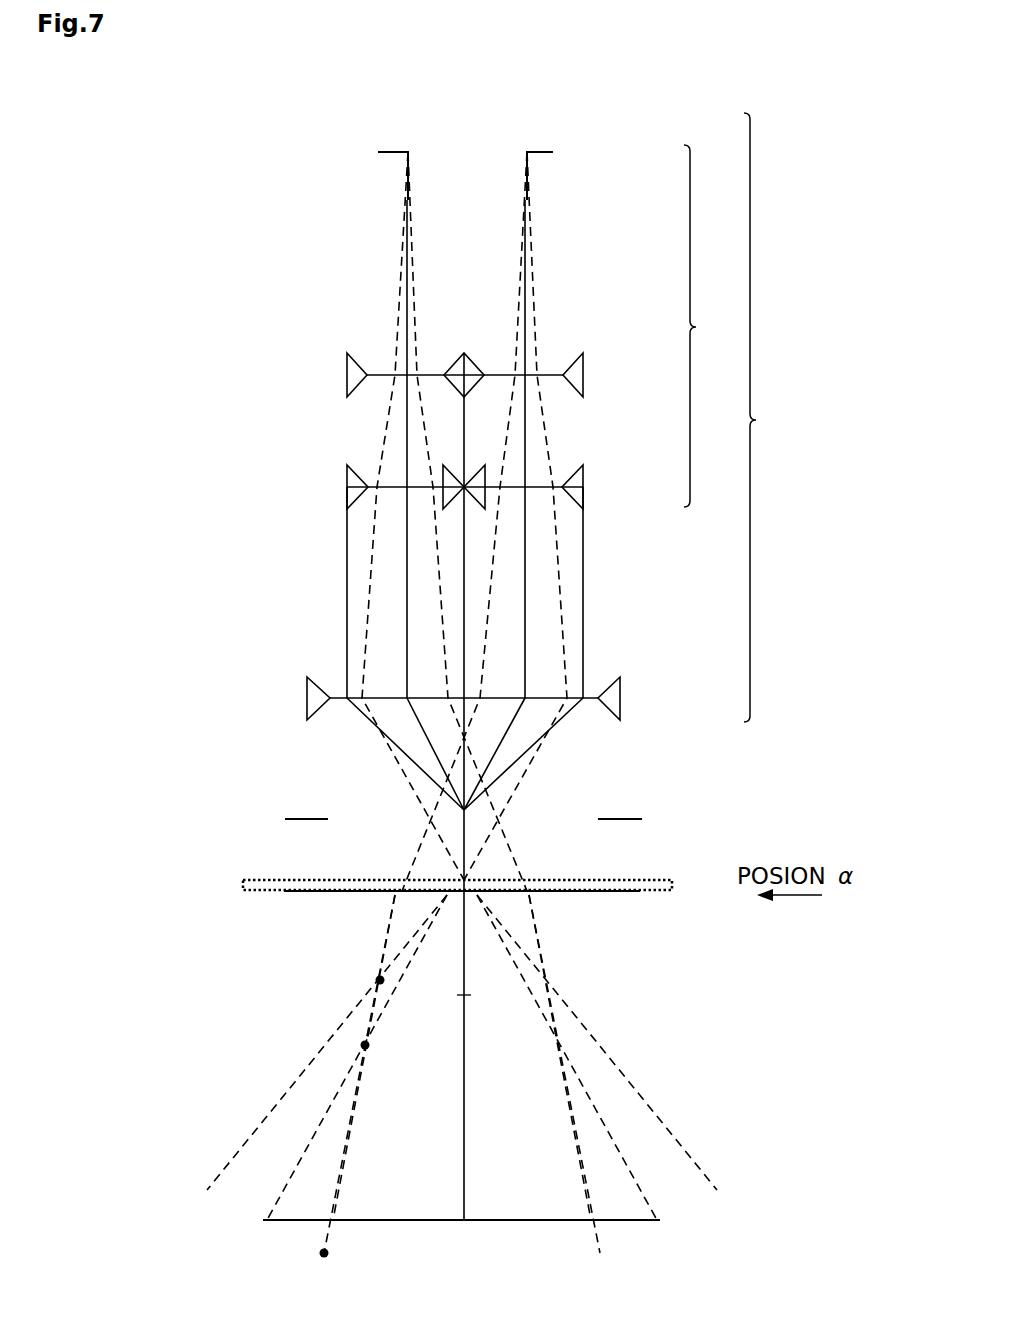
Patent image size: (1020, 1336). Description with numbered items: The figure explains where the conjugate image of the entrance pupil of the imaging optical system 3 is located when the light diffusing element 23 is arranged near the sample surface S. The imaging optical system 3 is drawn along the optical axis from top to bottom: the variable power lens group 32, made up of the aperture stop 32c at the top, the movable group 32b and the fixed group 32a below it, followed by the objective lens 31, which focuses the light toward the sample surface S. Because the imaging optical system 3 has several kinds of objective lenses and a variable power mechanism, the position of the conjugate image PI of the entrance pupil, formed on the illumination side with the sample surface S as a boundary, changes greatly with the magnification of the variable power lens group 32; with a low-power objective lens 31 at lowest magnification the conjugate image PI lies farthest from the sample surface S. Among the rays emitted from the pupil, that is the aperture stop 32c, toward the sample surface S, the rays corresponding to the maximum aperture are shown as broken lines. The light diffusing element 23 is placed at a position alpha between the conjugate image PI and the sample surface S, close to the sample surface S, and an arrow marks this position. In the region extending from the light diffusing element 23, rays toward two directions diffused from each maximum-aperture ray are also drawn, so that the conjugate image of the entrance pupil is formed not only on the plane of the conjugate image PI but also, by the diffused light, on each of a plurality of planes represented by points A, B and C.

The imaging optical system 3 is at (761, 417).
The variable power lens group 32 is at (707, 326).
The aperture stop 32c is at (553, 152).
The movable group 32b is at (585, 375).
The fixed group 32a is at (583, 487).
The objective lens 31 is at (620, 698).
The sample surface S is at (642, 819).
The light diffusing element 23 is at (672, 880).
The conjugate image of the entrance pupil PI is at (660, 1220).
The point A is at (391, 981).
The point B is at (373, 1059).
The point C is at (336, 1253).